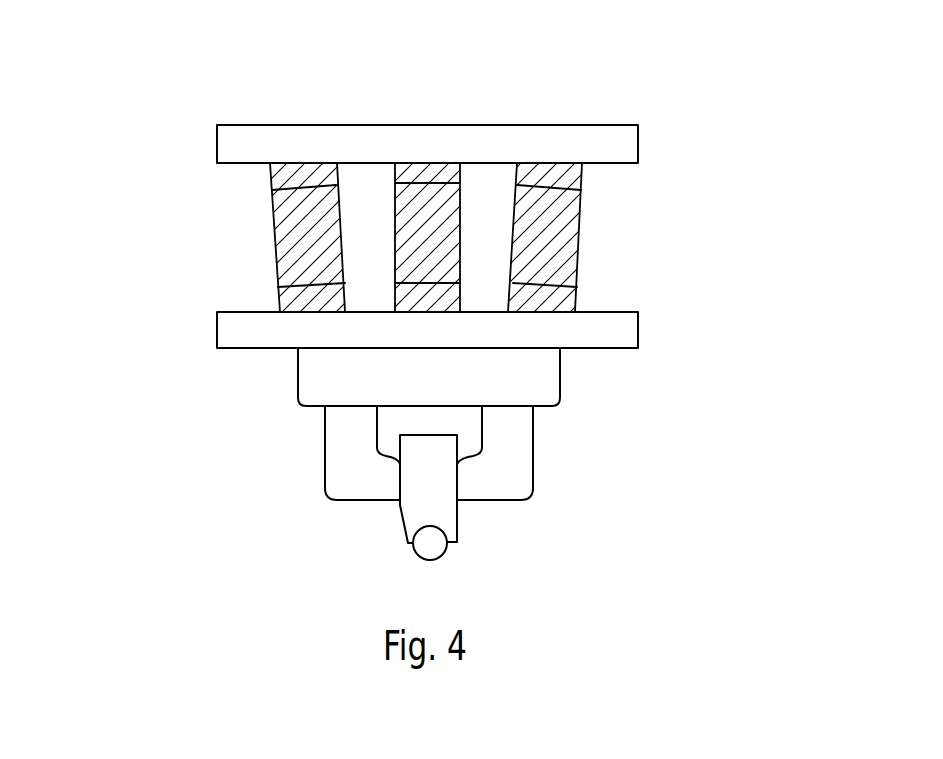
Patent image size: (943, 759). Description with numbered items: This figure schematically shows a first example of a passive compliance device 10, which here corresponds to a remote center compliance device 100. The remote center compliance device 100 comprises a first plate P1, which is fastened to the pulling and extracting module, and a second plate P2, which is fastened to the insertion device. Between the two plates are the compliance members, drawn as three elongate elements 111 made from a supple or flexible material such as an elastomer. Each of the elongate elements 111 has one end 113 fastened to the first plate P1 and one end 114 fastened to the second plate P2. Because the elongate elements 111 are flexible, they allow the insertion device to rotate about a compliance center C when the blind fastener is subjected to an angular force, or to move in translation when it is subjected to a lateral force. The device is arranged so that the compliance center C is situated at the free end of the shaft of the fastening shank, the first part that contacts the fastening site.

The remote center compliance device 100 is at (190, 240).
The passive compliance device 10 is at (680, 242).
The elongate elements 111 is at (298, 207).
The end 113 is at (303, 190).
The end 114 is at (303, 300).
The first plate P1 is at (618, 125).
The second plate P2 is at (253, 348).
The compliance center C is at (410, 553).